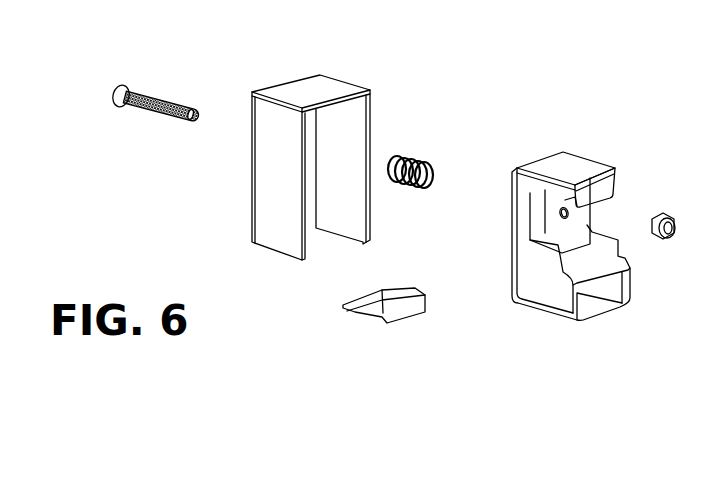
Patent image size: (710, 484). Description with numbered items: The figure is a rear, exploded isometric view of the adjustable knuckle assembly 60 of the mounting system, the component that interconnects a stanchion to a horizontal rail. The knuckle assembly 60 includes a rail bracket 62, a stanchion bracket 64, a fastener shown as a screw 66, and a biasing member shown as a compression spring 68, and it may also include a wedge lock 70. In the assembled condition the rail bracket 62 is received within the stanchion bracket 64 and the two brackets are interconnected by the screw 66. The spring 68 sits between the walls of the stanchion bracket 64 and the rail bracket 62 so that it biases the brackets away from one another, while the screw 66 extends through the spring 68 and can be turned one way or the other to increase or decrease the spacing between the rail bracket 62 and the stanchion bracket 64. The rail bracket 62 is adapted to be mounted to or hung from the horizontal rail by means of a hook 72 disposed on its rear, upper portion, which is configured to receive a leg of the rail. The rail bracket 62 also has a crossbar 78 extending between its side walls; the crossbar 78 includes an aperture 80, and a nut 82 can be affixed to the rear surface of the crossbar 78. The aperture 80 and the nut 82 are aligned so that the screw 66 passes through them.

The knuckle assembly 60 is at (516, 77).
The rail bracket 62 is at (585, 155).
The stanchion bracket 64 is at (341, 82).
The screw 66 is at (121, 92).
The compression spring 68 is at (418, 160).
The wedge lock 70 is at (400, 302).
The hook 72 is at (607, 190).
The crossbar 78 is at (582, 217).
The aperture 80 is at (560, 213).
The nut 82 is at (673, 240).